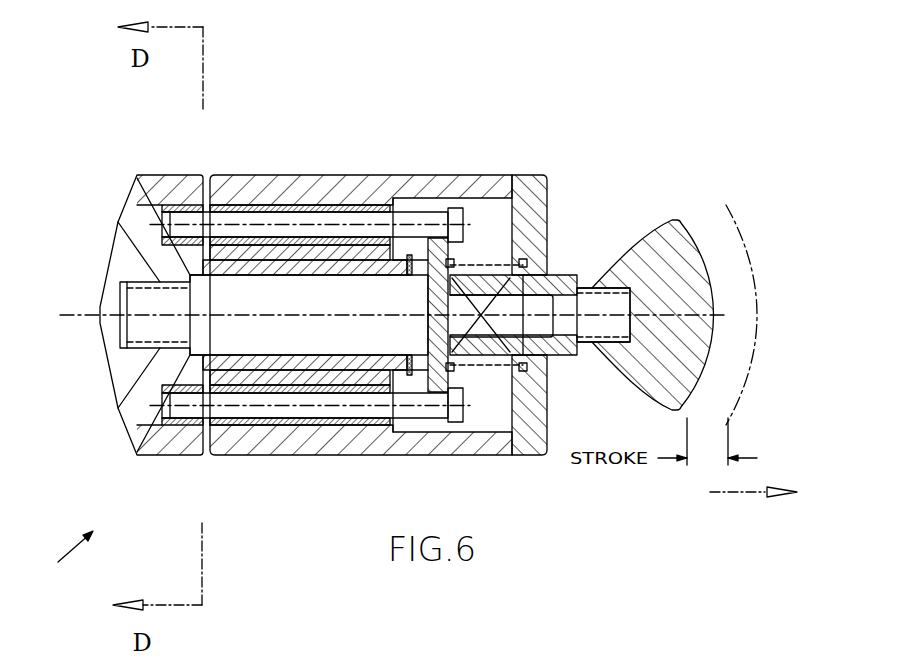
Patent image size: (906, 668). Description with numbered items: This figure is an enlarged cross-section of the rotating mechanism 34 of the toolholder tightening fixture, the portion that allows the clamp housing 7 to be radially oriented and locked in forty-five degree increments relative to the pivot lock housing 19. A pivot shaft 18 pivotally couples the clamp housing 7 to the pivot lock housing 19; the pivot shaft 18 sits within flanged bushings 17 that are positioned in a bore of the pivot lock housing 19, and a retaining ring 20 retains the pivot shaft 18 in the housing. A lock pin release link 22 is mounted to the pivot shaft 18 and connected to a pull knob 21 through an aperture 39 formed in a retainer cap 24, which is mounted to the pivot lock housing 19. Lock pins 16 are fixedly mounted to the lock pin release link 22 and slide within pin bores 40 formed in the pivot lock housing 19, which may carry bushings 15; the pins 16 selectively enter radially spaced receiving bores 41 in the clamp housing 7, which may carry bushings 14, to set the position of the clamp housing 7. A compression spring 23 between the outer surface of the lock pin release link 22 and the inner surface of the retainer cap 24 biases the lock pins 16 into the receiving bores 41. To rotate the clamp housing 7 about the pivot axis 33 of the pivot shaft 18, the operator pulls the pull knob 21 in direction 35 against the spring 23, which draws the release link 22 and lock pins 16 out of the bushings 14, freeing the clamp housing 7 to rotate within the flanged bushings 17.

The clamp housing 7 is at (138, 172).
The bushing 14 is at (187, 225).
The bushing 15 is at (215, 247).
The lock pin 16 is at (188, 413).
The flanged bushing 17 is at (272, 365).
The pivot shaft 18 is at (348, 332).
The pivot lock housing 19 is at (393, 190).
The retaining ring 20 is at (410, 258).
The pull knob 21 is at (678, 227).
The lock pin release link 22 is at (438, 382).
The compression spring 23 is at (535, 437).
The retainer cap 24 is at (530, 237).
The pivot axis 33 is at (720, 315).
The rotating mechanism 34 is at (58, 557).
The direction 35 is at (738, 492).
The aperture 39 is at (550, 272).
The pin bore 40 is at (318, 187).
The receiving bore 41 is at (160, 205).